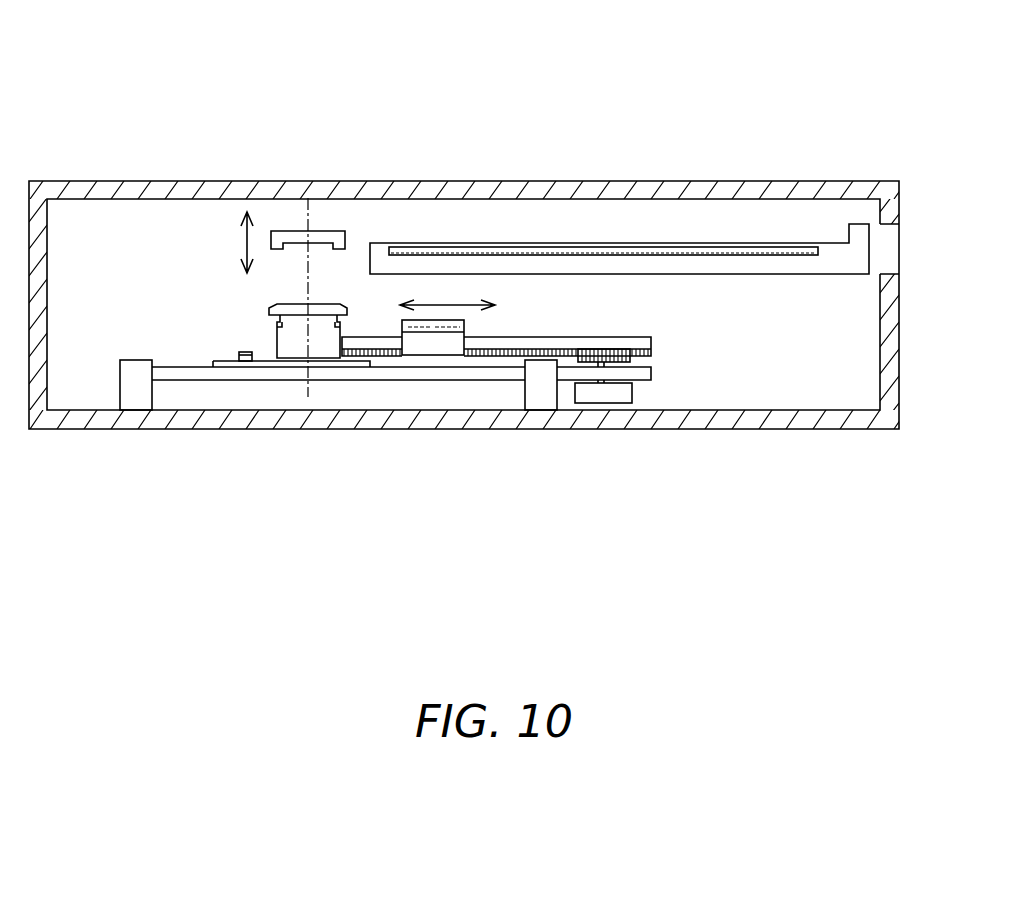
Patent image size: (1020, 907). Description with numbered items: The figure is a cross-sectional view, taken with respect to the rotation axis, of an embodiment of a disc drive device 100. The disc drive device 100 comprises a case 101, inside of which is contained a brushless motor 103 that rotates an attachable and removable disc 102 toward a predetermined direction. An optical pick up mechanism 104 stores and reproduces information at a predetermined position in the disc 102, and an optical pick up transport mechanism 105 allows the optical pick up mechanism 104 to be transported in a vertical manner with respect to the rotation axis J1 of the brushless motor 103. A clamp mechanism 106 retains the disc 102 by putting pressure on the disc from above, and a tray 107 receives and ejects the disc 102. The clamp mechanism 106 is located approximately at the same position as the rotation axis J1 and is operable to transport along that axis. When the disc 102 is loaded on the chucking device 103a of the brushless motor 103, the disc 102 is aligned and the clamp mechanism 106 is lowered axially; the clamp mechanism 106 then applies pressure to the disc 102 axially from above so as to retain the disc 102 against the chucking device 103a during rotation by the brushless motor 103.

The disc drive device 100 is at (122, 62).
The case 101 is at (700, 185).
The disc 102 is at (527, 252).
The brushless motor 103 is at (320, 348).
The chucking device 103a is at (270, 315).
The optical pick up mechanism 104 is at (433, 343).
The optical pick up transport mechanism 105 is at (617, 390).
The clamp mechanism 106 is at (328, 239).
The tray 107 is at (836, 263).
The rotation axis J1 is at (307, 284).